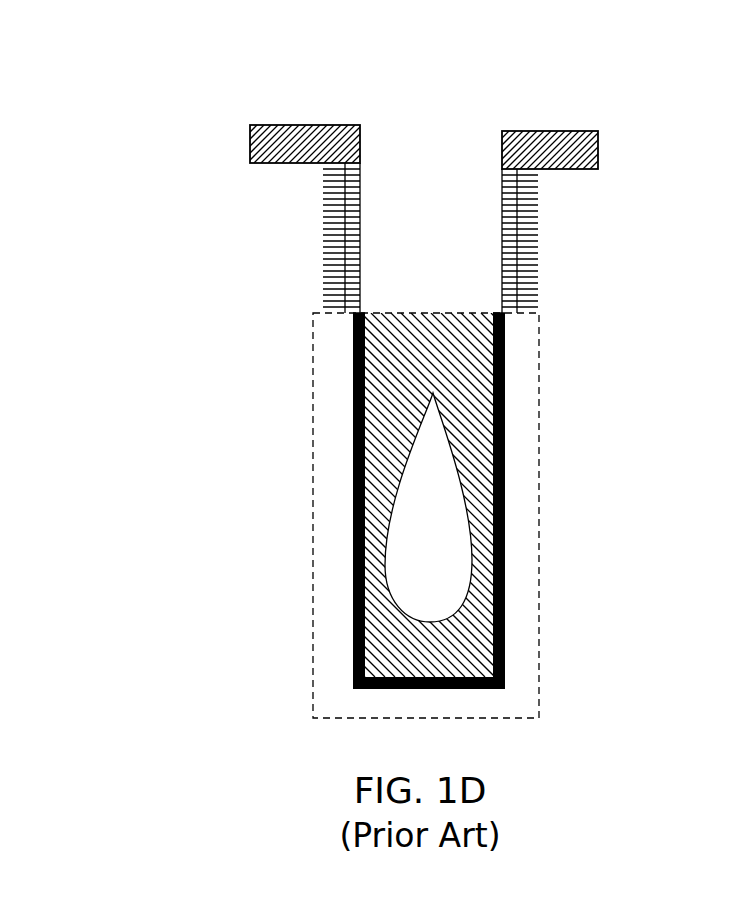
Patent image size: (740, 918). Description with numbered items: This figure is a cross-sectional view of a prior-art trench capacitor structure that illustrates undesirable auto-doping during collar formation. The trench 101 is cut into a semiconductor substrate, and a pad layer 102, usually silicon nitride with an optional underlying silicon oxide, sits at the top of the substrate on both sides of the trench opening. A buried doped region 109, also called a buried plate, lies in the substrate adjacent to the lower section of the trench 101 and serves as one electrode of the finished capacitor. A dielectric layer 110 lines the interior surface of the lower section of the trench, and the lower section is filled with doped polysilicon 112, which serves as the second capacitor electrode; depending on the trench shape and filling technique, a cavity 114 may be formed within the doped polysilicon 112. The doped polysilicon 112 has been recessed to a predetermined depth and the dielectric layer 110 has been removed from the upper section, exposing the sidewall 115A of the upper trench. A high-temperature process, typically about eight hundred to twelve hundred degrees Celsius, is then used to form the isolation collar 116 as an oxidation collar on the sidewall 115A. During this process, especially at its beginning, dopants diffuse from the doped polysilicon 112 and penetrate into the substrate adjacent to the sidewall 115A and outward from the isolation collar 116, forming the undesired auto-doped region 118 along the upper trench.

The trench 101 is at (452, 92).
The pad layer 102 is at (297, 149).
The buried doped region 109 is at (325, 508).
The dielectric layer 110 is at (506, 506).
The doped polysilicon 112 is at (473, 385).
The cavity 114 is at (428, 507).
The sidewall 115A is at (362, 262).
The isolation collar 116 is at (357, 220).
The auto-doped region 118 is at (337, 243).